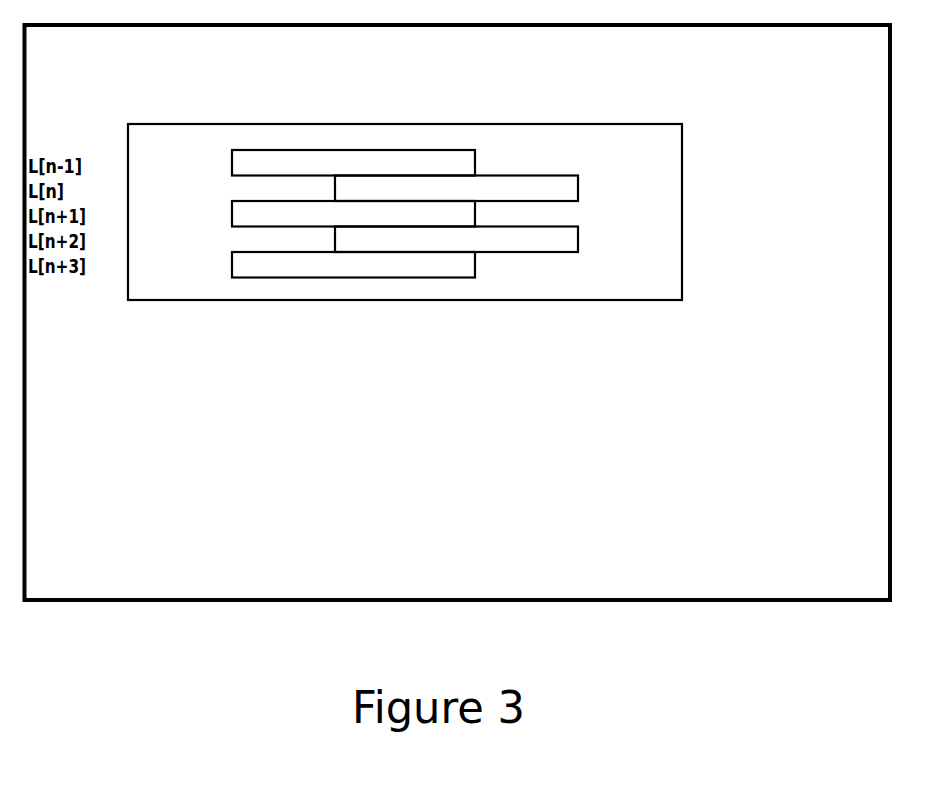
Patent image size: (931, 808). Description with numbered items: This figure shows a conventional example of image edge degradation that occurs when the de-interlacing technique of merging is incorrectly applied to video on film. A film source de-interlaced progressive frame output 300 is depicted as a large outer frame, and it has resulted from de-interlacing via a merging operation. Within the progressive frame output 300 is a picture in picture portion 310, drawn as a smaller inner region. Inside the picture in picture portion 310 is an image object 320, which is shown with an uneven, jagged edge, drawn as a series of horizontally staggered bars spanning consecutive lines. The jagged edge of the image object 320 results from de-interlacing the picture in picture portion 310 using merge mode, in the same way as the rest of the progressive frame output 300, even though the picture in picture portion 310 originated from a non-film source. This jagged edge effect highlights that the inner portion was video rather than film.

The film source de-interlaced progressive frame output 300 is at (785, 572).
The picture in picture portion 310 is at (575, 296).
The image object 320 is at (405, 212).